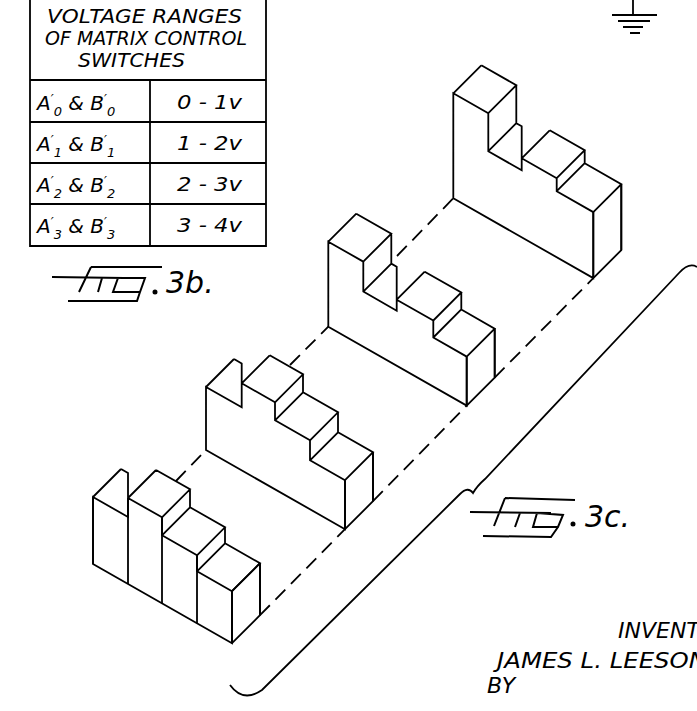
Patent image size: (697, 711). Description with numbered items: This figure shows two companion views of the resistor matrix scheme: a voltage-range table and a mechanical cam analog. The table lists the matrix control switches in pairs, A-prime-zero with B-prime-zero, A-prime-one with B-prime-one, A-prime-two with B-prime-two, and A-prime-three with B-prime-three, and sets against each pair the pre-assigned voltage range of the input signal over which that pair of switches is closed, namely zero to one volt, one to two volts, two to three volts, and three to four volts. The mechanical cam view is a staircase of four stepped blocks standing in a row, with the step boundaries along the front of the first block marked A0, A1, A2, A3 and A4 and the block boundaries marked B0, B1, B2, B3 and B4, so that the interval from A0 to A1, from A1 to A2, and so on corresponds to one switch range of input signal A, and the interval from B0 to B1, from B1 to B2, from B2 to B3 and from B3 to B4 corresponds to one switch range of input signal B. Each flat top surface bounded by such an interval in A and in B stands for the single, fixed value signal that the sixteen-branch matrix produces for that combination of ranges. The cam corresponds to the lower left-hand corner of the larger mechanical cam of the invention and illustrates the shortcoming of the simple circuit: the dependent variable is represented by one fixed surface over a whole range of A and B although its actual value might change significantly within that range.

The matrix column switch boundary A0 is at (93, 564).
The matrix column switch boundary A1 is at (128, 584).
The matrix column switch boundary A2 is at (162, 603).
The matrix column switch boundary A3 is at (197, 623).
The matrix column switch boundary A4 is at (232, 643).
The matrix row block boundary B0 is at (246, 619).
The matrix row block boundary B1 is at (253, 647).
The matrix row block boundary B2 is at (363, 532).
The matrix row block boundary B3 is at (490, 407).
The matrix row block boundary B4 is at (617, 275).